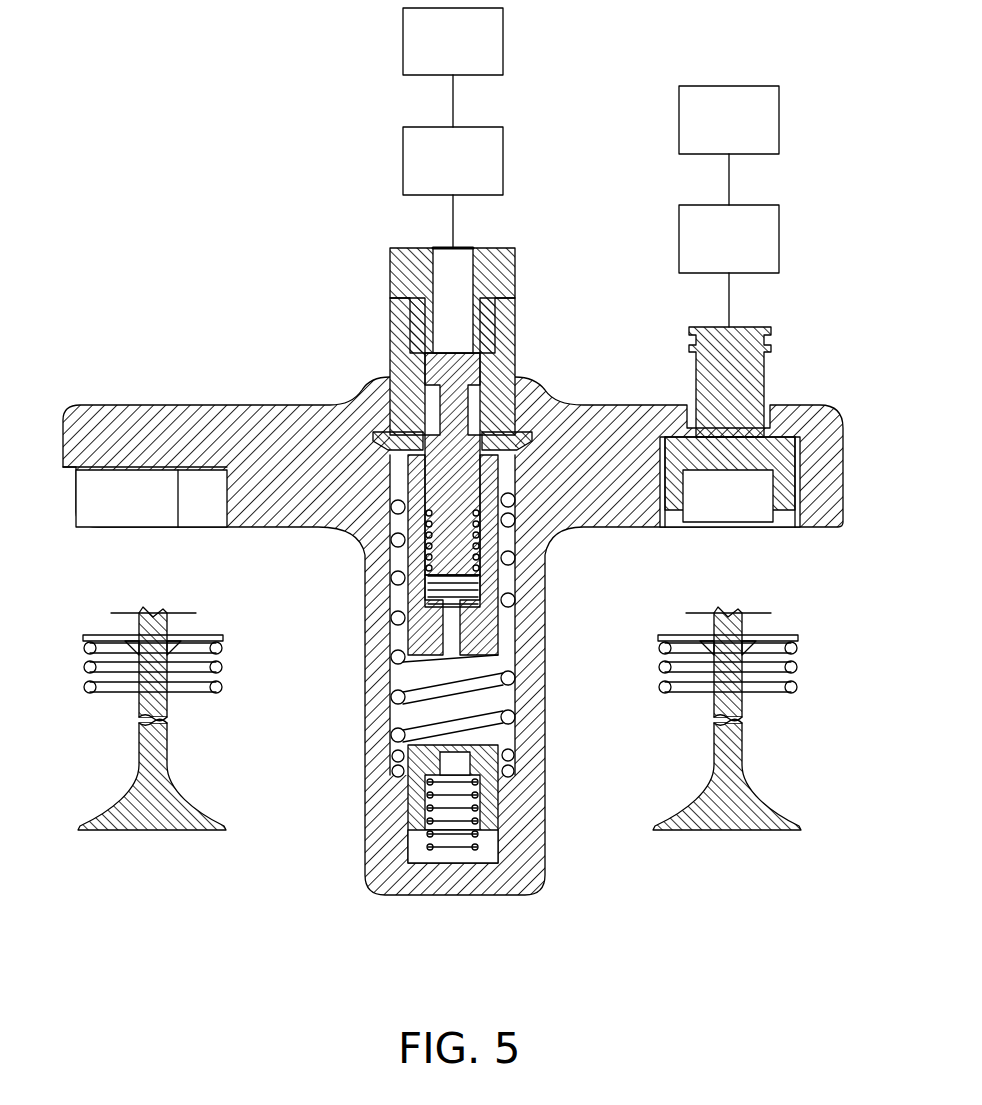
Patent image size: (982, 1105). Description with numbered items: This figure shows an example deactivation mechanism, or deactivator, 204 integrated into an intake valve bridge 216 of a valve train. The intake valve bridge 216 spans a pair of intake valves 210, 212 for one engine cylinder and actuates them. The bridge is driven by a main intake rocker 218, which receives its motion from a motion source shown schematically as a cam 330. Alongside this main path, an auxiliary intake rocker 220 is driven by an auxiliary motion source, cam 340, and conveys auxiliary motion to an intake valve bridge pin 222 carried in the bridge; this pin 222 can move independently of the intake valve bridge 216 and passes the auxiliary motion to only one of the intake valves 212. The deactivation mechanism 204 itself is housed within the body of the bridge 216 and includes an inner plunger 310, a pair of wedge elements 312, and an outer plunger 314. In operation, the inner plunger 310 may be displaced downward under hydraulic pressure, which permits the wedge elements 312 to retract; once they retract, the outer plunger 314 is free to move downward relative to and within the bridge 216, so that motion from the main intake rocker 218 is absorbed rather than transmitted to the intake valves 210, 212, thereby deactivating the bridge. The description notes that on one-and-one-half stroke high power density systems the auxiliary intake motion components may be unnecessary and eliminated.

The deactivation mechanism 204 is at (436, 555).
The intake valve 210 is at (160, 708).
The intake valve 212 is at (735, 708).
The intake valve bridge 216 is at (592, 553).
The main intake rocker 218 is at (503, 160).
The auxiliary intake rocker 220 is at (779, 238).
The intake valve bridge pin 222 is at (743, 358).
The inner plunger 310 is at (485, 368).
The wedge elements 312 is at (377, 445).
The outer plunger 314 is at (389, 322).
The cam 330 is at (503, 40).
The cam 340 is at (779, 118).